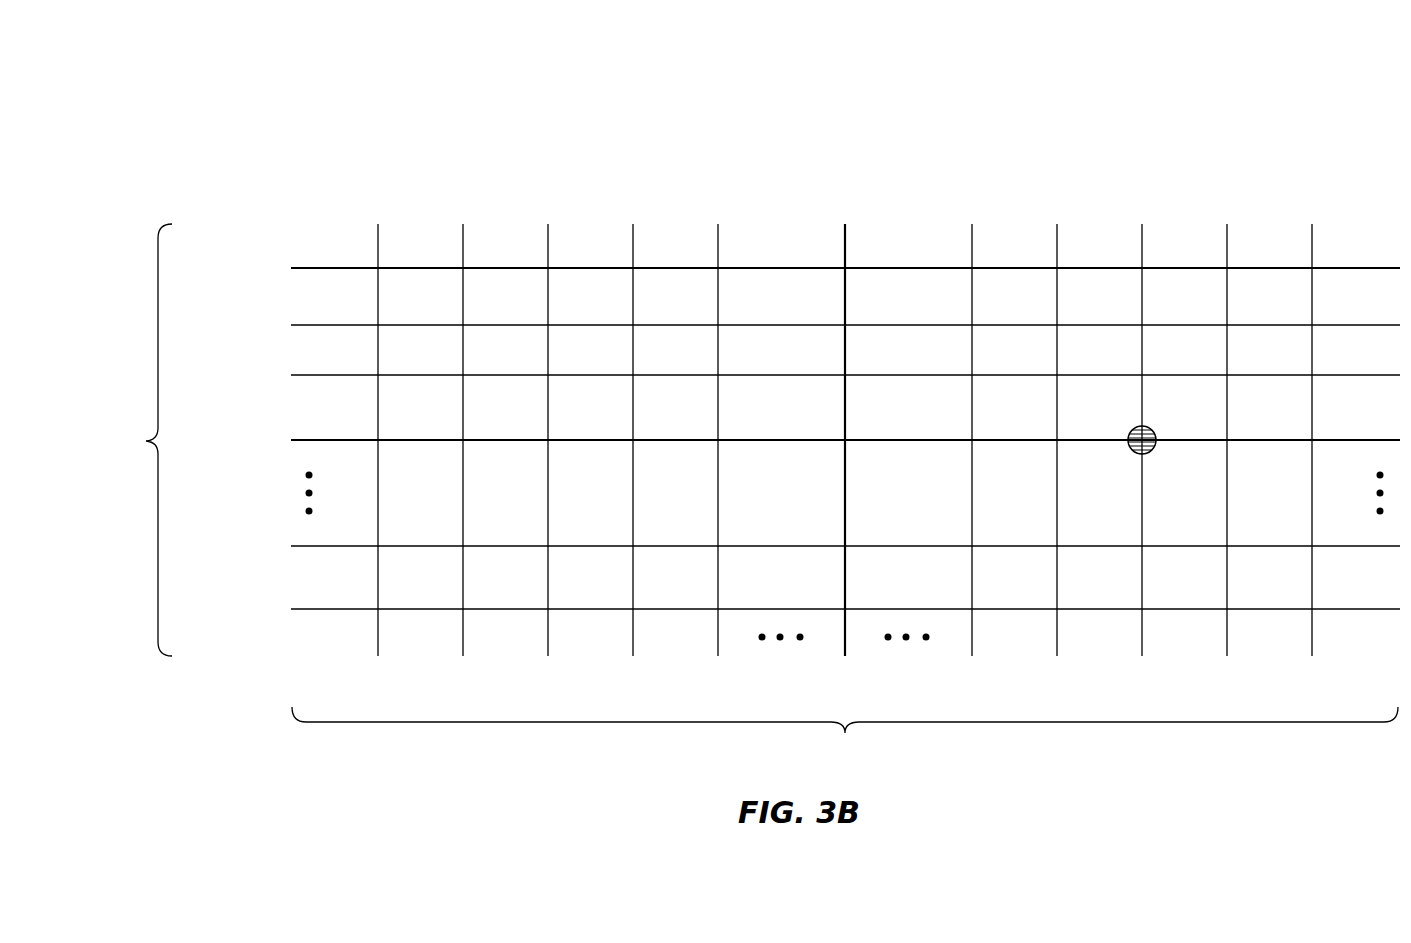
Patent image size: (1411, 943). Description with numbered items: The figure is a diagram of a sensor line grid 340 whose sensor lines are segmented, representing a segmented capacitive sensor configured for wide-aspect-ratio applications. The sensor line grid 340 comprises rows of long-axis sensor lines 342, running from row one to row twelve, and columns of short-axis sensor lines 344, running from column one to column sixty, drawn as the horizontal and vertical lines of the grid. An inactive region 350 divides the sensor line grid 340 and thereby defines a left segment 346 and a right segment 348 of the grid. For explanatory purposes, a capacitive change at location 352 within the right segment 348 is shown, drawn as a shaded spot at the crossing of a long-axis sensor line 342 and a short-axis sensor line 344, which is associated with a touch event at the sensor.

The sensor line grid 340 is at (752, 405).
The long-axis sensor lines 342 is at (146, 441).
The short-axis sensor lines 344 is at (845, 452).
The left segment 346 is at (558, 189).
The right segment 348 is at (1237, 189).
The inactive region 350 is at (845, 225).
The location 352 is at (1133, 430).